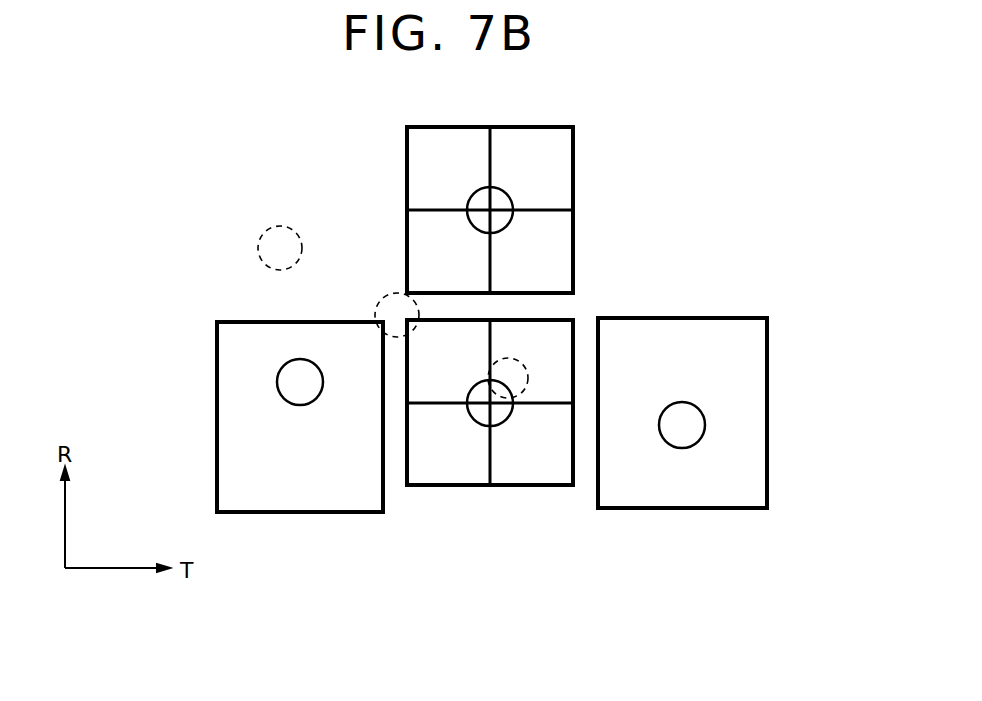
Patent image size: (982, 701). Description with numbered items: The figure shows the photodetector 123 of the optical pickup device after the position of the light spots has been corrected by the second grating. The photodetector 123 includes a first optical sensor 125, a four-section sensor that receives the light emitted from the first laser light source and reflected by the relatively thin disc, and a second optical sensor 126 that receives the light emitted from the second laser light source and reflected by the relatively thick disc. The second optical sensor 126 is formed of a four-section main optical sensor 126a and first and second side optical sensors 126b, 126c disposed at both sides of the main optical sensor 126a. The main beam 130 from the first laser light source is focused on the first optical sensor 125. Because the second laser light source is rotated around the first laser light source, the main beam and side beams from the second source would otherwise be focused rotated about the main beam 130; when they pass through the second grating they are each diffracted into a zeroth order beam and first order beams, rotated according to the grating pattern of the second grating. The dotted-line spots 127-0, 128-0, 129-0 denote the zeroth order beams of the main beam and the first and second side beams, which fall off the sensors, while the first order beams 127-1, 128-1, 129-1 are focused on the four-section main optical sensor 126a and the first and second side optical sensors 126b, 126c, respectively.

The photodetector 123 is at (727, 170).
The first optical sensor 125 is at (574, 247).
The second optical sensor 126 is at (762, 585).
The four-section main optical sensor 126a is at (530, 486).
The first side optical sensor 126b is at (335, 512).
The second side optical sensor 126c is at (731, 508).
The 0th order beam of main beam 127-0 is at (383, 292).
The first order beam of main beam 127-1 is at (480, 424).
The 0th order beam of first side beam 128-0 is at (265, 227).
The first order beam of first side beam 128-1 is at (277, 388).
The 0th order beam of second side beam 129-0 is at (528, 368).
The first order beam of second side beam 129-1 is at (705, 428).
The main beam 130 is at (513, 200).